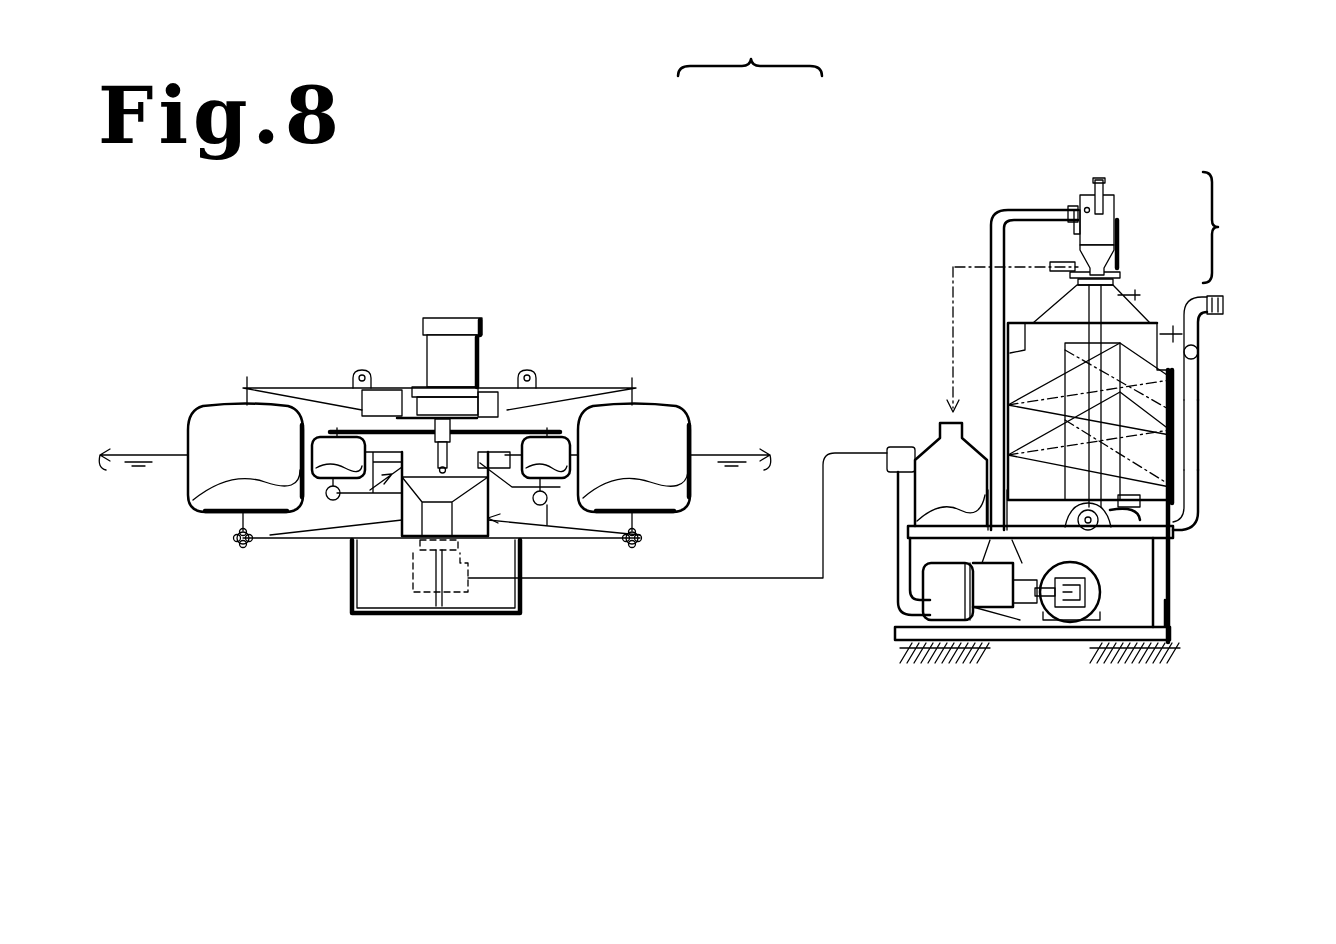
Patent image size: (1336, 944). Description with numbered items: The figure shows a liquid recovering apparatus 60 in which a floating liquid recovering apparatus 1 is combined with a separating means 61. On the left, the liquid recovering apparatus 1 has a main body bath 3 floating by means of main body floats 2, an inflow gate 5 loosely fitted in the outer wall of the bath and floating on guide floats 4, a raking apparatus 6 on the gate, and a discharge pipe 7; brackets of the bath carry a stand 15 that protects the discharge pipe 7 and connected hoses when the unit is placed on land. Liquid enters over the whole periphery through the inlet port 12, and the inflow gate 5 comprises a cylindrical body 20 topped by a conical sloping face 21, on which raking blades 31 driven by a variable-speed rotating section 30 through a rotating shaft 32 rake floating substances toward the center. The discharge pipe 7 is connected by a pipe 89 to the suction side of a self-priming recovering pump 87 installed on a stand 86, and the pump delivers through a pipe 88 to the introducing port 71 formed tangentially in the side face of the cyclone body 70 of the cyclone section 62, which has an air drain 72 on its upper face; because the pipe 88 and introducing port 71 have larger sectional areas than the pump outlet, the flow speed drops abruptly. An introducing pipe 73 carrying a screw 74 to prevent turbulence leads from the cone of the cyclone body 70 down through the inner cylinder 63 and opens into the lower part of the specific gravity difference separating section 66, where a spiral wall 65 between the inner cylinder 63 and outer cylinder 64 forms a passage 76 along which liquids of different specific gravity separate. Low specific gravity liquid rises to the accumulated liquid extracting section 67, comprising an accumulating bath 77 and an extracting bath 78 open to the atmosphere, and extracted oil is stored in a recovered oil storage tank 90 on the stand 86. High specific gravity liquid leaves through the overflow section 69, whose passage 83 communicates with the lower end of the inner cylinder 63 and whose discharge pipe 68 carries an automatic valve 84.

The liquid recovering apparatus 1 is at (645, 207).
The main body floats 2 is at (660, 423).
The main body bath 3 is at (570, 490).
The guide floats 4 is at (595, 490).
The inflow gate 5 is at (385, 490).
The raking apparatus 6 is at (423, 413).
The discharge pipe 7 is at (425, 555).
The inlet port 12 is at (555, 385).
The stand 15 is at (377, 617).
The cylindrical body 20 is at (403, 535).
The sloping face 21 is at (218, 510).
The rotating section 30 is at (450, 318).
The raking blades 31 is at (385, 412).
The rotating shaft 32 is at (480, 385).
The liquid recovering apparatus 60 is at (750, 51).
The separating means 61 is at (893, 165).
The cyclone section 62 is at (1120, 212).
The inner cylinder 63 is at (1027, 350).
The outer cylinder 64 is at (925, 405).
The spiral wall 65 is at (1203, 482).
The specific gravity difference separating section 66 is at (935, 593).
The accumulated liquid extracting section 67 is at (1229, 227).
The discharge pipe 68 is at (1203, 443).
The overflow section 69 is at (1222, 305).
The cyclone body 70 is at (1075, 237).
The introducing port 71 is at (1076, 212).
The air drain 72 is at (1096, 182).
The introducing pipe 73 is at (1020, 307).
The screw 74 is at (955, 267).
The passage 76 is at (1200, 390).
The accumulating bath 77 is at (1150, 310).
The extracting bath 78 is at (1122, 210).
The passage 83 is at (1167, 572).
The automatic valve 84 is at (1229, 341).
The stand 86 is at (1027, 640).
The recovering pump 87 is at (897, 640).
The pipe 88 is at (995, 208).
The pipe 89 is at (660, 583).
The recovered oil storage tank 90 is at (900, 470).